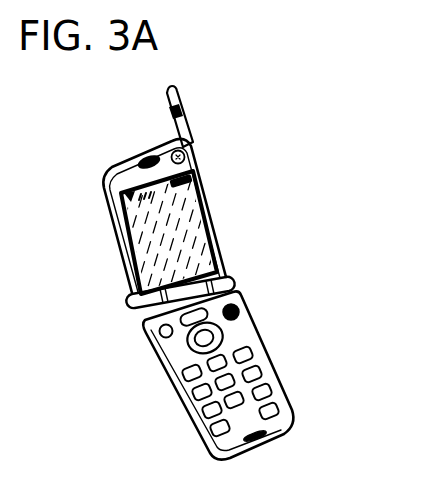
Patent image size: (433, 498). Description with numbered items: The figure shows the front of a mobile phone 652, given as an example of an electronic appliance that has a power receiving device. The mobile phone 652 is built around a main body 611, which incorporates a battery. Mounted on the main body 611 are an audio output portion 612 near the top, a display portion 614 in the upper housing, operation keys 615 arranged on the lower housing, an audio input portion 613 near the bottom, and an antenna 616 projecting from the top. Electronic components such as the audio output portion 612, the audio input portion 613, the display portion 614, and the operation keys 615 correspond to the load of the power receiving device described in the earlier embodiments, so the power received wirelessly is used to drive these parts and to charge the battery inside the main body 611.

The main body 611 is at (166, 354).
The audio output portion 612 is at (148, 161).
The audio input portion 613 is at (268, 437).
The display portion 614 is at (183, 232).
The operation keys 615 is at (242, 313).
The antenna 616 is at (183, 117).
The mobile phone 652 is at (200, 172).